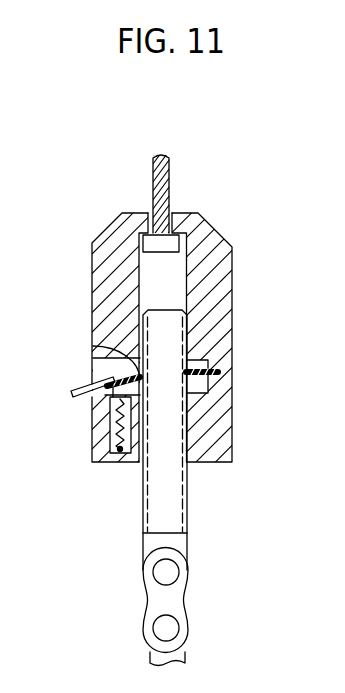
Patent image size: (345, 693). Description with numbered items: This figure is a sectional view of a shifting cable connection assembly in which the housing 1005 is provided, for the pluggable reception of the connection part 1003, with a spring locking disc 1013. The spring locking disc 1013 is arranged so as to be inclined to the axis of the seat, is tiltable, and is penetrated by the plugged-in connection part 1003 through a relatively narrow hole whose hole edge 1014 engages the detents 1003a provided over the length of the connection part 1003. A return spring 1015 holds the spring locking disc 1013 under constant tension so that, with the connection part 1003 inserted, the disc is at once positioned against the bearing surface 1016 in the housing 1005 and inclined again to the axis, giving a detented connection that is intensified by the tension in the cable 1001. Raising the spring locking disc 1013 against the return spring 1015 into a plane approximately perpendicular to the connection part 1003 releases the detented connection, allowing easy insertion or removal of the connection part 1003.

The cable 1001 is at (168, 165).
The housing 1005 is at (219, 258).
The hole edge 1014 is at (93, 346).
The spring locking disc 1013 is at (99, 375).
The bearing surface 1016 is at (97, 397).
The return spring 1015 is at (100, 431).
The connection part 1003 is at (175, 510).
The detents 1003a is at (145, 500).